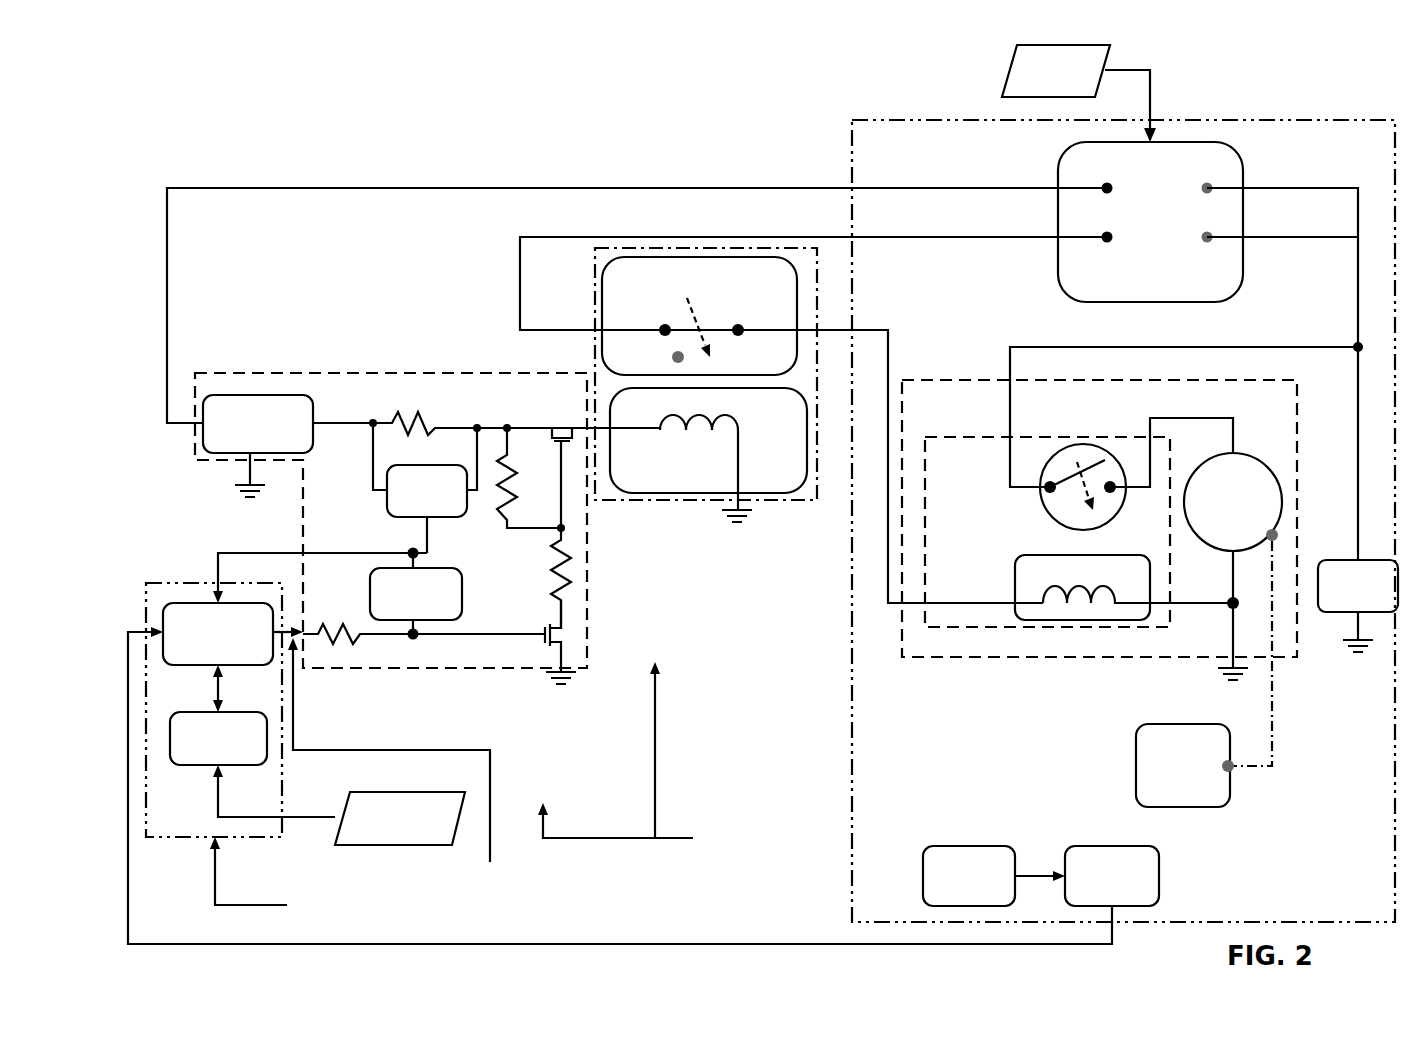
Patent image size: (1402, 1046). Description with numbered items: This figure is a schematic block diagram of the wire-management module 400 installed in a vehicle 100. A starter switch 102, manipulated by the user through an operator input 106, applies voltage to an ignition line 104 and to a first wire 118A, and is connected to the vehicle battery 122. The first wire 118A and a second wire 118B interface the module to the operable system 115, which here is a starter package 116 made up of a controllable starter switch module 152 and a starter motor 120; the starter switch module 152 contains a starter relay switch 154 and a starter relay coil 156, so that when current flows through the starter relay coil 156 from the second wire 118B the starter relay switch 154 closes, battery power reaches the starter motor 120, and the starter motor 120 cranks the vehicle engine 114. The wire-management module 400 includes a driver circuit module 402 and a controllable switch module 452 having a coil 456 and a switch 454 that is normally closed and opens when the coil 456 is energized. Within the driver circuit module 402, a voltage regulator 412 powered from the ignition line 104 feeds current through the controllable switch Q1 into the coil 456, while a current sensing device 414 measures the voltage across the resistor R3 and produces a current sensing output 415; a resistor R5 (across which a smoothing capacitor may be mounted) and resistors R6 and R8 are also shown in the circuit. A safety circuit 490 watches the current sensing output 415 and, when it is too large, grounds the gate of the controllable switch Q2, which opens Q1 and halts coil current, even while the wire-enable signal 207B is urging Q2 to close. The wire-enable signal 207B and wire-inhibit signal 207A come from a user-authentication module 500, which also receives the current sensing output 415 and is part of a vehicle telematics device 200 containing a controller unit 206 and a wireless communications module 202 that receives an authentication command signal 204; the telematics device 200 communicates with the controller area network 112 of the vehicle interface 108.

The vehicle 100 is at (872, 168).
The starter switch 102 is at (1127, 229).
The ignition line 104 is at (997, 188).
The operator input 106 is at (1031, 86).
The vehicle interface 108 is at (944, 890).
The controller area network 112 is at (1087, 890).
The vehicle engine 114 is at (1158, 780).
The operable system 115 is at (973, 658).
The starter package 116 is at (927, 422).
The first wire 118A is at (1030, 237).
The second wire 118B is at (868, 334).
The starter motor 120 is at (1208, 516).
The vehicle battery 122 is at (1333, 600).
The controllable starter switch module 152 is at (1004, 628).
The starter relay switch 154 is at (1040, 503).
The starter relay coil 156 is at (1017, 588).
The vehicle telematics device 200 is at (152, 832).
The wireless communications module 202 is at (193, 752).
The authentication command signal 204 is at (370, 834).
The controller unit 206 is at (193, 648).
The wire-inhibit signal 207A is at (436, 775).
The wire-enable signal 207B is at (389, 750).
The wire-management module 400 is at (648, 758).
The driver circuit module 402 is at (473, 670).
The voltage regulator 412 is at (232, 439).
The current sensing device 414 is at (402, 505).
The current sensing output 415 is at (240, 553).
The controllable switch module 452 is at (703, 502).
The switch 454 is at (727, 297).
The coil 456 is at (745, 431).
The safety circuit 490 is at (391, 608).
The user-authentication module 500 is at (279, 878).
The resistor R3 is at (425, 406).
The resistor R5 is at (531, 478).
The resistor R6 is at (548, 578).
The resistor R8 is at (343, 617).
The controllable switch Q1 is at (543, 460).
The controllable switch Q2 is at (494, 642).